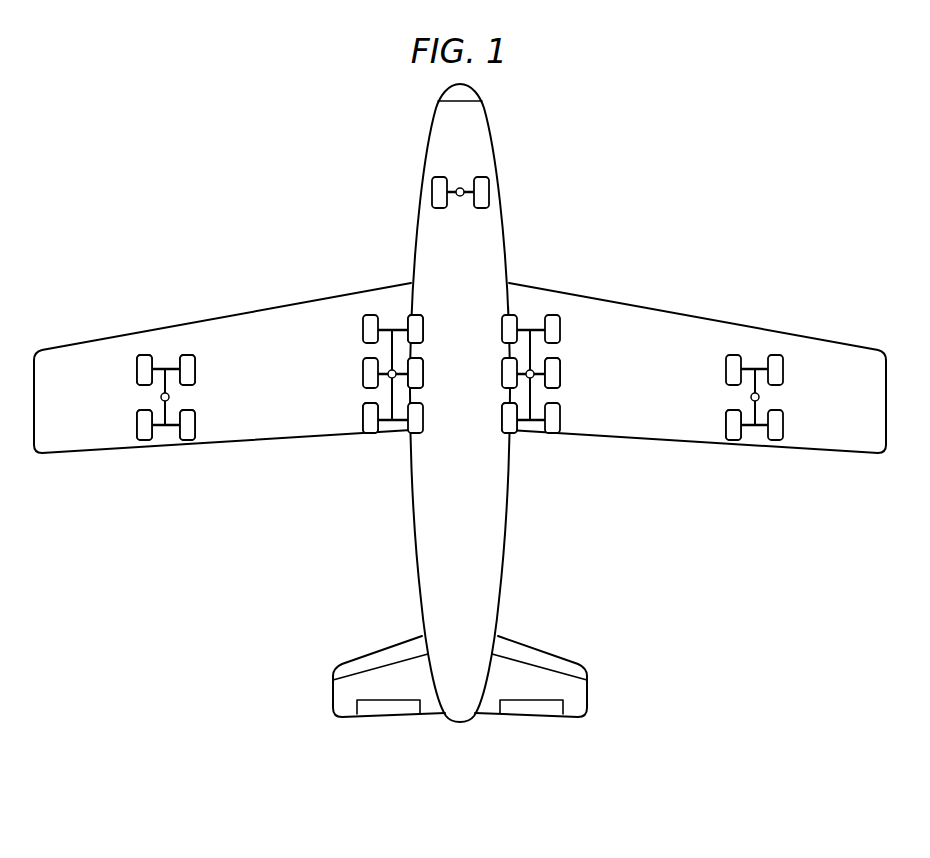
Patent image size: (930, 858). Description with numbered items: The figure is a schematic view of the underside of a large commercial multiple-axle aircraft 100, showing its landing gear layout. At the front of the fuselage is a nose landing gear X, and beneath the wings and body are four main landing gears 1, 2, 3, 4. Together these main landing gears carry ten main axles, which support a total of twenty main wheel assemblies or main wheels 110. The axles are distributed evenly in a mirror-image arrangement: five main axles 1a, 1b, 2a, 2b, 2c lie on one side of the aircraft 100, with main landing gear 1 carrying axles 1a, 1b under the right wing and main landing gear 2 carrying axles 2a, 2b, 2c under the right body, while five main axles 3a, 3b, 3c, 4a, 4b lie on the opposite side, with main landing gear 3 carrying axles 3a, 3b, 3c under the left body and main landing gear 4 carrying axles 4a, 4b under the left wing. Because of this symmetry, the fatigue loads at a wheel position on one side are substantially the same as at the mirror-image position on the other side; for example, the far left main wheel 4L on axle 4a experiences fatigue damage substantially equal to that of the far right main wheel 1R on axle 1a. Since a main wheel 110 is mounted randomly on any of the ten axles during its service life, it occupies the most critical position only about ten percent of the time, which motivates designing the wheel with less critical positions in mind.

The aircraft 100 is at (328, 178).
The nose landing gear X is at (460, 163).
The main landing gear 1 is at (784, 391).
The main axle 1a is at (782, 340).
The main axle 1b is at (760, 440).
The far right main wheel 1R is at (785, 370).
The main landing gear 2 is at (561, 367).
The main axle 2a is at (535, 329).
The main axle 2b is at (540, 372).
The main axle 2c is at (532, 434).
The main landing gear 3 is at (359, 366).
The main axle 3a is at (386, 329).
The main axle 3b is at (382, 372).
The main axle 3c is at (390, 434).
The main landing gear 4 is at (134, 391).
The main axle 4a is at (138, 340).
The main axle 4b is at (160, 440).
The far left main wheel 4L is at (136, 370).
The main wheel 110 is at (196, 363).